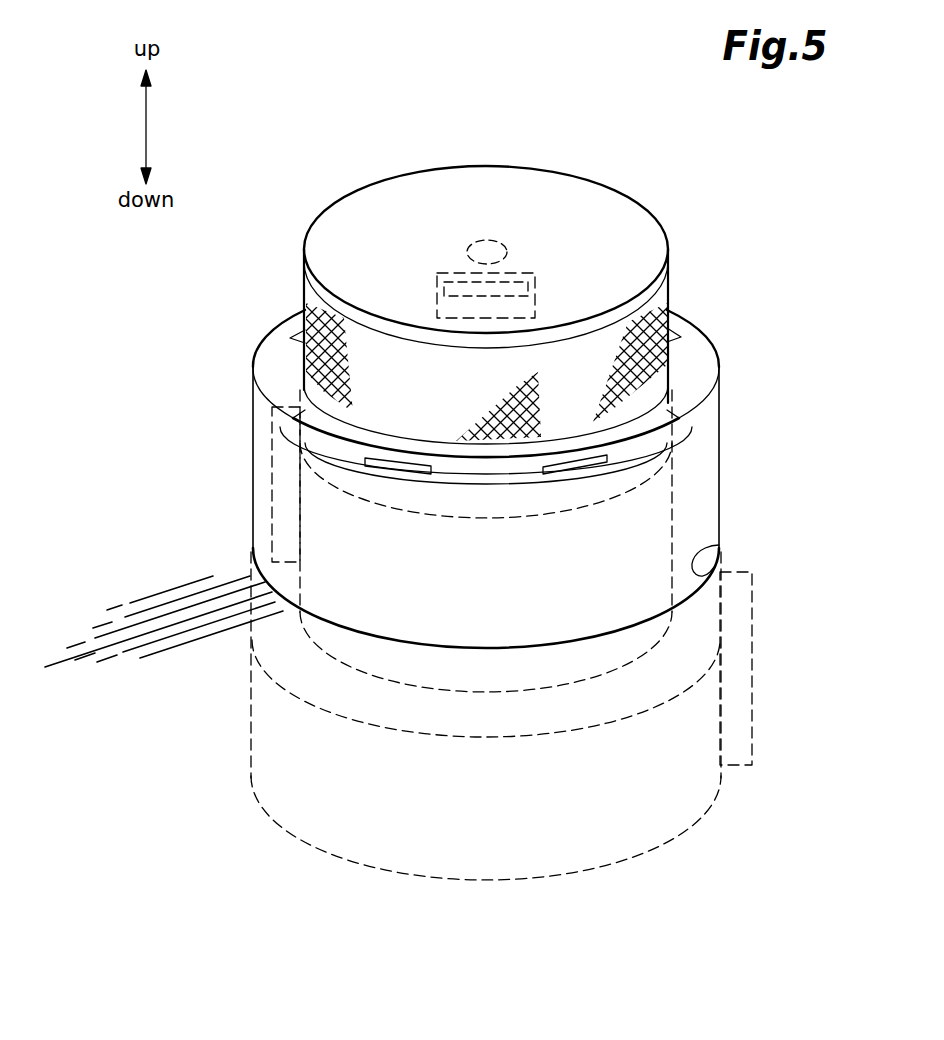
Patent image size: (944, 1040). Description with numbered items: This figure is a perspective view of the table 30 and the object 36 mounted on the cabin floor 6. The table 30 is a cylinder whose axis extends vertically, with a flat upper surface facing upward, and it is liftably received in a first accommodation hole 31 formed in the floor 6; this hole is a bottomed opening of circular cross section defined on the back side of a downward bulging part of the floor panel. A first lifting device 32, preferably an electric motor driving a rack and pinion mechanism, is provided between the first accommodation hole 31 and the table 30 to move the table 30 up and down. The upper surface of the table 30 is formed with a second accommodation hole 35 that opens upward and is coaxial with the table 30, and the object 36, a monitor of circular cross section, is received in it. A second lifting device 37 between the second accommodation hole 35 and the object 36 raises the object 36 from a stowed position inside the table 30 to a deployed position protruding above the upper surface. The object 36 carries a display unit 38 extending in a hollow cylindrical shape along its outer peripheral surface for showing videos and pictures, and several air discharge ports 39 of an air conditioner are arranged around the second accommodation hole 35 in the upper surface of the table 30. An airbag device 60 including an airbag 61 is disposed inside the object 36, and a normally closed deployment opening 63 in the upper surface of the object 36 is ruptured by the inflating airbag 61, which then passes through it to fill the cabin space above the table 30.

The floor 6 is at (130, 584).
The table 30 is at (700, 461).
The first accommodation hole 31 is at (722, 545).
The first lifting device 32 is at (752, 660).
The second accommodation hole 35 is at (670, 360).
The object 36 is at (610, 204).
The second lifting device 37 is at (272, 462).
The display unit 38 is at (387, 360).
The air discharge port 39 is at (664, 306).
The airbag device 60 is at (435, 292).
The airbag 61 is at (510, 282).
The deployment opening 63 is at (480, 260).